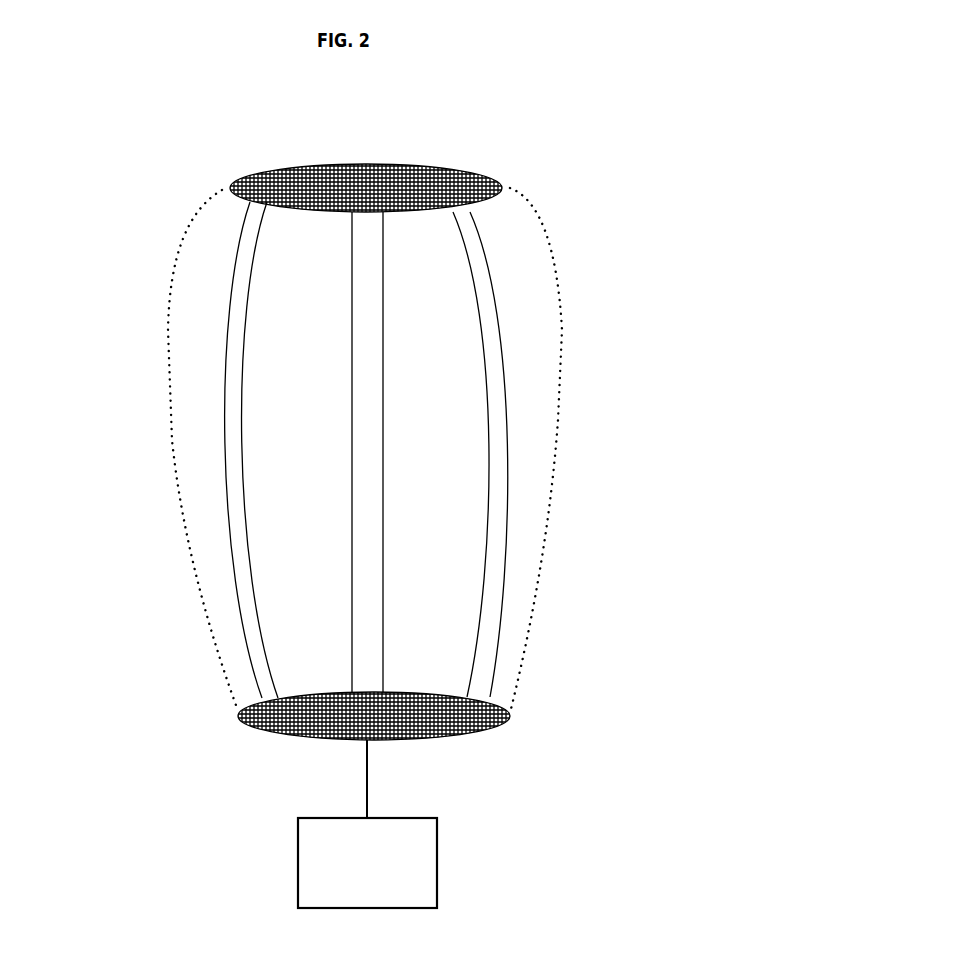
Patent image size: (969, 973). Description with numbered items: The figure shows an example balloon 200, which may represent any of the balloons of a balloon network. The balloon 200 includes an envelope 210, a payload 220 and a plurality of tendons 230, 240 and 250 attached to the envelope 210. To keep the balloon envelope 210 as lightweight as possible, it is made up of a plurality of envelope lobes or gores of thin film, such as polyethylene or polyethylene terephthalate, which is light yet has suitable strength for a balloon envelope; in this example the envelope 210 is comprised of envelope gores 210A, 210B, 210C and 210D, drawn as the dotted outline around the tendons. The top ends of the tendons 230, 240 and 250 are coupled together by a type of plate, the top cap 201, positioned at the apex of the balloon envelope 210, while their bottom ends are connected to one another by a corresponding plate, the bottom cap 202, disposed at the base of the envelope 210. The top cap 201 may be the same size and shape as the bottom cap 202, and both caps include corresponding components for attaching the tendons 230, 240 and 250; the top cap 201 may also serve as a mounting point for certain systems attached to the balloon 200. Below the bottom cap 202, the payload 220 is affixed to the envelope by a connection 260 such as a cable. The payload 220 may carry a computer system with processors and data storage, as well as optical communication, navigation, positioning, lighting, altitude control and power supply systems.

The balloon 200 is at (636, 50).
The top cap 201 is at (483, 172).
The bottom cap 202 is at (327, 735).
The envelope 210 is at (563, 312).
The envelope gore 210A is at (192, 490).
The envelope gore 210B is at (288, 548).
The envelope gore 210C is at (462, 565).
The envelope gore 210D is at (540, 447).
The payload 220 is at (298, 858).
The tendon 230 is at (262, 201).
The tendon 240 is at (363, 212).
The tendon 250 is at (467, 210).
The connection 260 is at (367, 790).